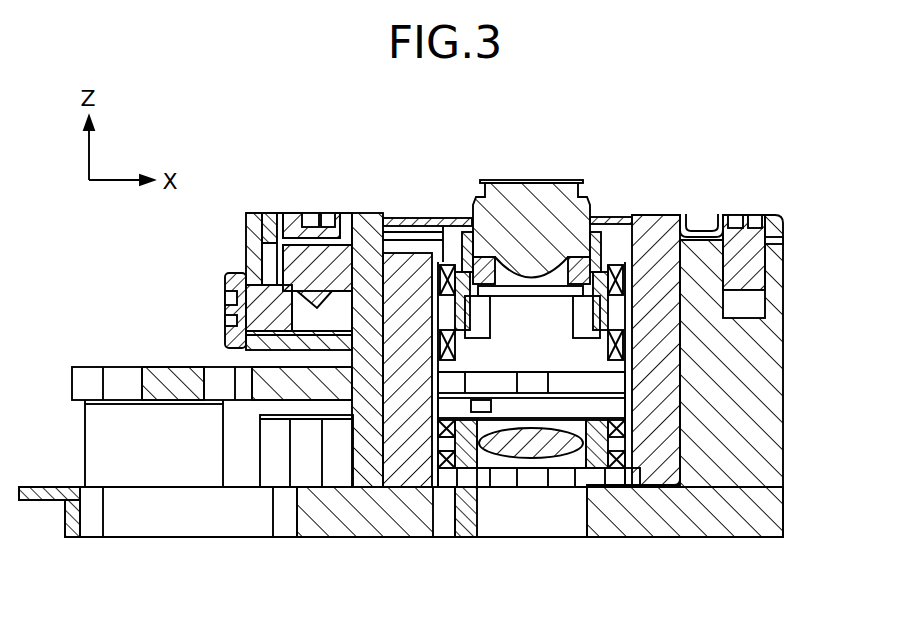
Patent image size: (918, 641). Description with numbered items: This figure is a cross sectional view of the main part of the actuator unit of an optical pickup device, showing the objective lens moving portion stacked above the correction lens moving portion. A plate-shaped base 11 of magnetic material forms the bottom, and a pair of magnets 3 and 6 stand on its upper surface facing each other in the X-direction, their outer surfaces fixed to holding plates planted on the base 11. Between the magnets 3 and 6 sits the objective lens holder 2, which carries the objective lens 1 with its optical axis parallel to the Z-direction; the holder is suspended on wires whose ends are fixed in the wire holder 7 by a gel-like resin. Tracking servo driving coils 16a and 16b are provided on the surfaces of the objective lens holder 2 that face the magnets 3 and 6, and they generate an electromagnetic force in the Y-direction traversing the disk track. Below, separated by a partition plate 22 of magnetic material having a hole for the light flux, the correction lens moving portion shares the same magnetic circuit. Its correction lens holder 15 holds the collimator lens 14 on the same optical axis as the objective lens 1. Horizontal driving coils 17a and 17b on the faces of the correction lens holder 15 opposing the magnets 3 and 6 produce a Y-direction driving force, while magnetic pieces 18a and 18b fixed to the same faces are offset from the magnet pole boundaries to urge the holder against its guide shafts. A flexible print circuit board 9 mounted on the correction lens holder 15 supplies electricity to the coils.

The objective lens 1 is at (540, 190).
The objective lens holder 2 is at (600, 272).
The magnet 3 is at (690, 263).
The magnet 6 is at (400, 262).
The wire holder 7 is at (247, 214).
The flexible print circuit board 9 is at (343, 415).
The base 11 is at (778, 512).
The collimator lens 14 is at (553, 452).
The correction lens holder 15 is at (603, 470).
The tracking servo driving coil 16a is at (624, 343).
The tracking servo driving coil 16b is at (440, 343).
The horizontal driving coil 17a is at (608, 426).
The horizontal driving coil 17b is at (410, 442).
The magnetic piece 18a is at (624, 442).
The magnetic piece 18b is at (457, 442).
The partition plate 22 is at (610, 400).